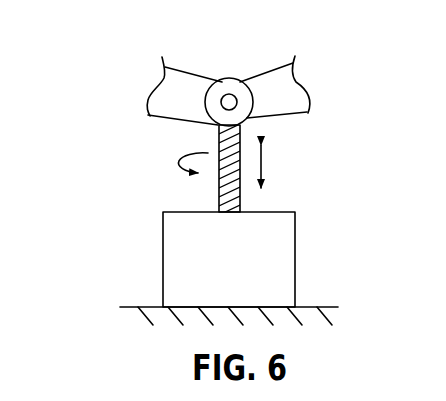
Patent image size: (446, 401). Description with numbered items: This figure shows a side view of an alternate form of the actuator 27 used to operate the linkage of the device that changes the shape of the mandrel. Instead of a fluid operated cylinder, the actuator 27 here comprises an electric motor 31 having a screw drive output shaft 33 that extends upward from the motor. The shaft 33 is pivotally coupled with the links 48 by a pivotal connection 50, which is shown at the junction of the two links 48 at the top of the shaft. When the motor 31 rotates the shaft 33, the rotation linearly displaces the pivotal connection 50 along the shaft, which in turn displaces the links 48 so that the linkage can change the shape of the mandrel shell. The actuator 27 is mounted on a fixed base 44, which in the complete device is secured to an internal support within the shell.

The actuator 27 is at (145, 258).
The electric motor 31 is at (283, 263).
The screw drive output shaft 33 is at (220, 197).
The fixed base 44 is at (231, 83).
The pivotal connection 50 is at (221, 102).
The links 48 is at (169, 103).